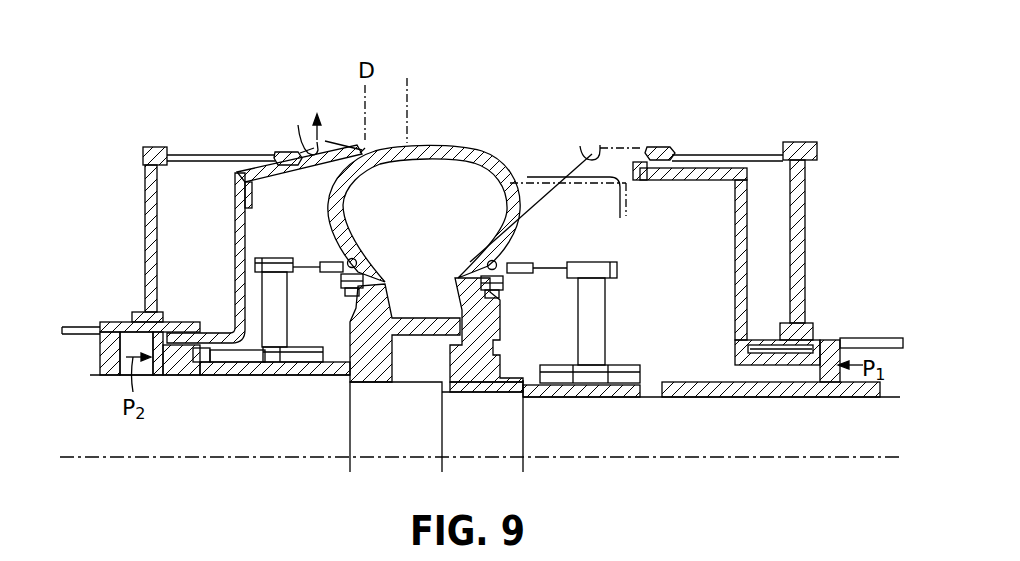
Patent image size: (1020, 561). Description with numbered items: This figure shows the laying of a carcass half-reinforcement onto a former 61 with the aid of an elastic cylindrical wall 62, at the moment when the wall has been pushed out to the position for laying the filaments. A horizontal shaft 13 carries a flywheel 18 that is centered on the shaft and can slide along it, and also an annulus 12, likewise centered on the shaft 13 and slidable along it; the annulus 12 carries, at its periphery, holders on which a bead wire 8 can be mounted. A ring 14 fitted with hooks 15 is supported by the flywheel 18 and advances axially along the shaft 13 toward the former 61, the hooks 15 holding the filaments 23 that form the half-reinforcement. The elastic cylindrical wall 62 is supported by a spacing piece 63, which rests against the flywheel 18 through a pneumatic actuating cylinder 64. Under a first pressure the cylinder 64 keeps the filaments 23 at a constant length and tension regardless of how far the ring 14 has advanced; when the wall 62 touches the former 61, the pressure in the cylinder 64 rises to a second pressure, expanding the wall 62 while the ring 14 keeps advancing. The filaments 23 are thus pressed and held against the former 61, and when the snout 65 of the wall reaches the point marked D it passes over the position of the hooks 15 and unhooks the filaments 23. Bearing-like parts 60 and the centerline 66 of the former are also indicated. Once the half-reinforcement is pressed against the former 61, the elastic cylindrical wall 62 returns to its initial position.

The bead wire 8 is at (347, 261).
The annulus 12 is at (290, 375).
The horizontal shaft 13 is at (765, 430).
The ring 14 is at (275, 152).
The hooks 15 is at (300, 125).
The flywheel 18 is at (165, 147).
The filaments 23 is at (338, 141).
The bearing race 60 is at (347, 288).
The former 61 is at (450, 148).
The elastic cylindrical wall 62 is at (296, 178).
The spacing piece 63 is at (735, 285).
The pneumatic actuating cylinder 64 is at (822, 345).
The snout 65 is at (365, 148).
The rotor axis 66 is at (413, 137).